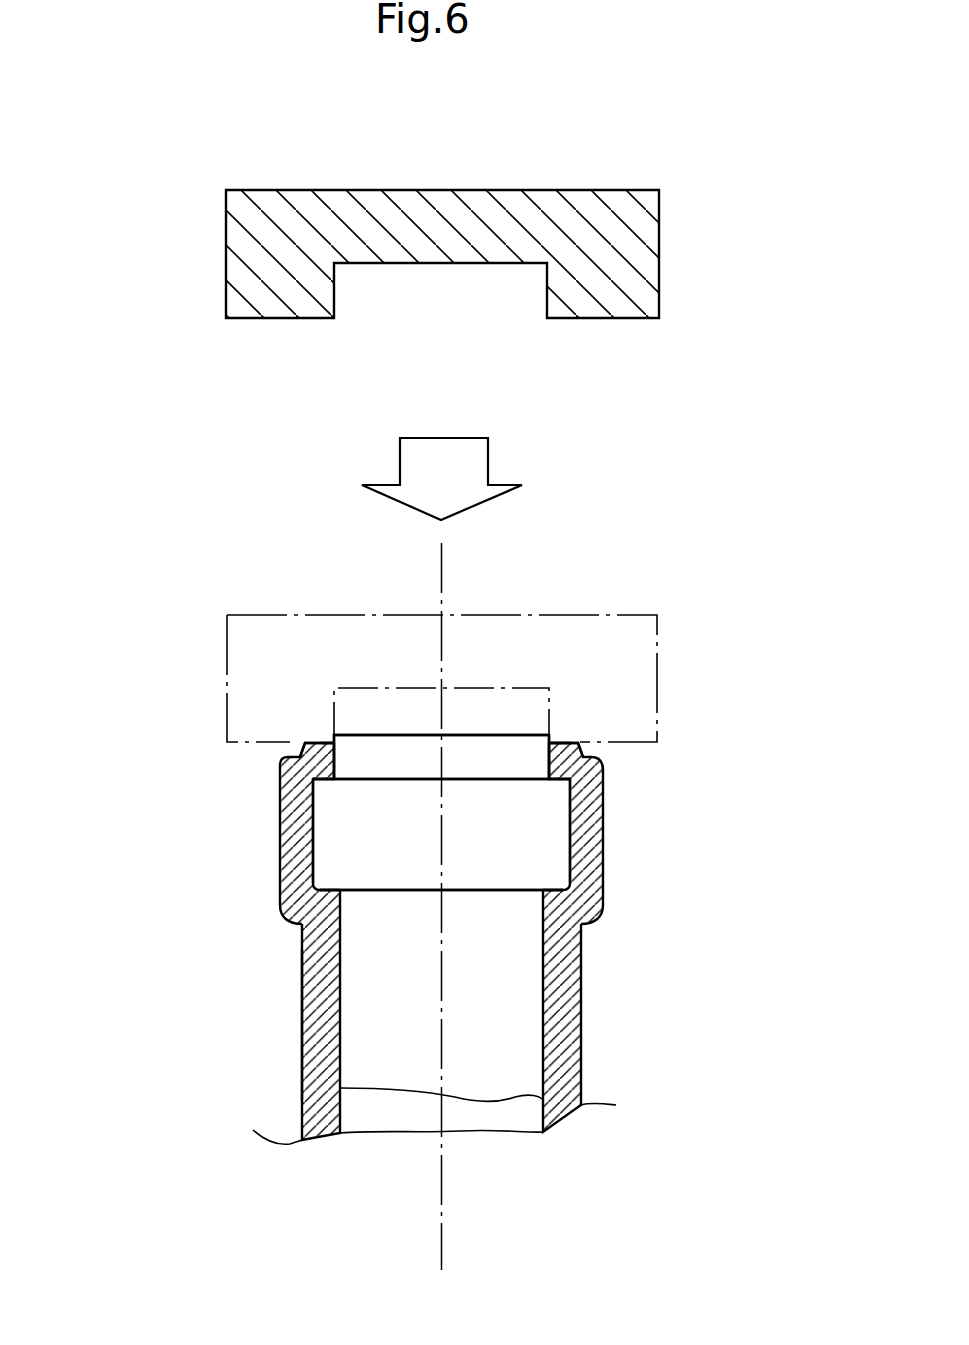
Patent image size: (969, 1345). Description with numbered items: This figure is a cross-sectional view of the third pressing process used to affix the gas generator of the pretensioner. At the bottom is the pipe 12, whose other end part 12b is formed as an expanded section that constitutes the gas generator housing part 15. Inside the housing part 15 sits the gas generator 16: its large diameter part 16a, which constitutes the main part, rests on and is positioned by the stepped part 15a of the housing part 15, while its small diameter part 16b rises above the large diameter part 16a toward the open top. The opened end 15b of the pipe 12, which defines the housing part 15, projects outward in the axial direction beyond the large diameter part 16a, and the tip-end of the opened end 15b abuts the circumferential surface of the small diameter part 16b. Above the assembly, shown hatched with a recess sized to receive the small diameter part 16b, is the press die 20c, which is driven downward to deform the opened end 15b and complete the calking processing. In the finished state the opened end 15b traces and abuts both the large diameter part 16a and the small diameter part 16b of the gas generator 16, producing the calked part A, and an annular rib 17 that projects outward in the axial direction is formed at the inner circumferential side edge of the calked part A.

The pipe 12 is at (587, 975).
The other end part of the pipe 12b is at (315, 963).
The gas generator housing part 15 is at (603, 823).
The stepped part 15a is at (566, 872).
The opened end 15b is at (286, 759).
The gas generator 16 is at (343, 860).
The large diameter part 16a is at (358, 818).
The small diameter part 16b is at (468, 757).
The annular rib 17 is at (321, 742).
The press die 20c is at (293, 615).
The calked part A is at (290, 742).